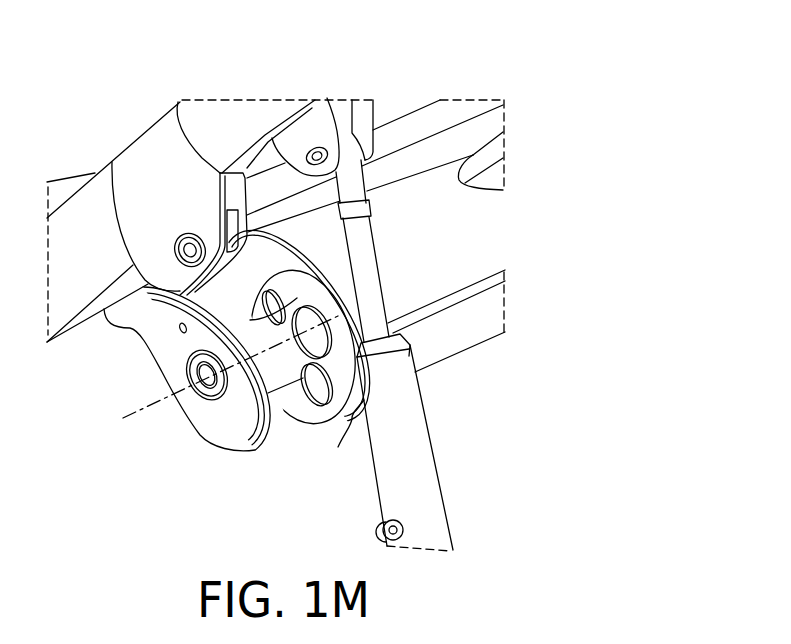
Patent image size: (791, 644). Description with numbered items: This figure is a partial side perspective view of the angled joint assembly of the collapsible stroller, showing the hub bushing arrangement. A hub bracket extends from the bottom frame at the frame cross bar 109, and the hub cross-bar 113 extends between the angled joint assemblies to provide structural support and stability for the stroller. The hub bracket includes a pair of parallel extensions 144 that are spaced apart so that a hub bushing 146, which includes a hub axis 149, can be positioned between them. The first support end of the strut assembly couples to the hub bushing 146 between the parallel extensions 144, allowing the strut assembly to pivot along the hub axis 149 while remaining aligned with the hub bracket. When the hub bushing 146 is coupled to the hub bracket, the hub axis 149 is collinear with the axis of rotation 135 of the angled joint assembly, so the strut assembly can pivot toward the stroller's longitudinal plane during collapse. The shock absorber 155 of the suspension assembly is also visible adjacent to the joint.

The frame cross bar 109 is at (405, 127).
The hub cross-bar 113 is at (477, 333).
The axis of rotation 135 is at (148, 426).
The parallel extensions 144 is at (163, 352).
The hub bushing 146 is at (268, 453).
The hub axis 149 is at (205, 408).
The shock absorber 155 is at (423, 490).